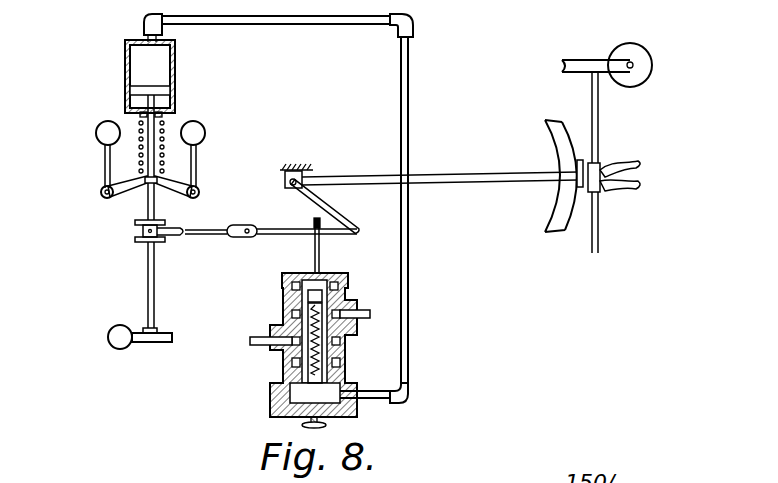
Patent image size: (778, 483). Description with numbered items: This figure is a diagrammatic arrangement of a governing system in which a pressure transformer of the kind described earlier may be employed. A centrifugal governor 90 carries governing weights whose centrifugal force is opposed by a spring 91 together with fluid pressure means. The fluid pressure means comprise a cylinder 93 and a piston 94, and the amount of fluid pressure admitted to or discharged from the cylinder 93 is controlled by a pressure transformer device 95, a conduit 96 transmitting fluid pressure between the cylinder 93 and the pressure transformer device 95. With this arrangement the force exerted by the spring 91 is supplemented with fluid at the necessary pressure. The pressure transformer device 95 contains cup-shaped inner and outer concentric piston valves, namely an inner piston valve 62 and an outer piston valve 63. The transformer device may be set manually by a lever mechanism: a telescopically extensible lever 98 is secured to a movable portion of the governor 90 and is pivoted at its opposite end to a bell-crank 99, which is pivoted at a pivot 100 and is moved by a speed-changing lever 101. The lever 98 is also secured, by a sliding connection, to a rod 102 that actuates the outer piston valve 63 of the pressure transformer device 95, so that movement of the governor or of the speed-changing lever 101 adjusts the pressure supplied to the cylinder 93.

The inner piston valve 62 is at (281, 331).
The outer piston valve 63 is at (284, 297).
The centrifugal governor 90 is at (97, 141).
The spring 91 is at (163, 126).
The cylinder 93 is at (176, 50).
The piston 94 is at (146, 88).
The pressure transformer device 95 is at (272, 377).
The conduit 96 is at (410, 298).
The telescopically extensible lever 98 is at (253, 224).
The bell-crank 99 is at (333, 209).
The pivot 100 is at (287, 184).
The speed-changing lever 101 is at (481, 175).
The rod 102 is at (313, 255).